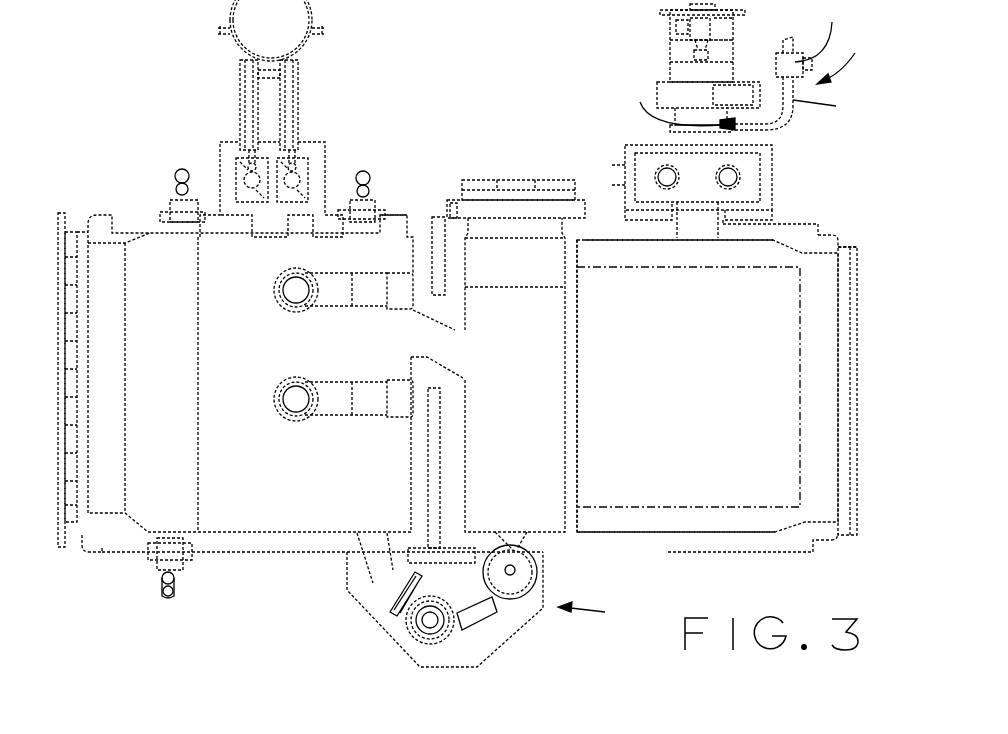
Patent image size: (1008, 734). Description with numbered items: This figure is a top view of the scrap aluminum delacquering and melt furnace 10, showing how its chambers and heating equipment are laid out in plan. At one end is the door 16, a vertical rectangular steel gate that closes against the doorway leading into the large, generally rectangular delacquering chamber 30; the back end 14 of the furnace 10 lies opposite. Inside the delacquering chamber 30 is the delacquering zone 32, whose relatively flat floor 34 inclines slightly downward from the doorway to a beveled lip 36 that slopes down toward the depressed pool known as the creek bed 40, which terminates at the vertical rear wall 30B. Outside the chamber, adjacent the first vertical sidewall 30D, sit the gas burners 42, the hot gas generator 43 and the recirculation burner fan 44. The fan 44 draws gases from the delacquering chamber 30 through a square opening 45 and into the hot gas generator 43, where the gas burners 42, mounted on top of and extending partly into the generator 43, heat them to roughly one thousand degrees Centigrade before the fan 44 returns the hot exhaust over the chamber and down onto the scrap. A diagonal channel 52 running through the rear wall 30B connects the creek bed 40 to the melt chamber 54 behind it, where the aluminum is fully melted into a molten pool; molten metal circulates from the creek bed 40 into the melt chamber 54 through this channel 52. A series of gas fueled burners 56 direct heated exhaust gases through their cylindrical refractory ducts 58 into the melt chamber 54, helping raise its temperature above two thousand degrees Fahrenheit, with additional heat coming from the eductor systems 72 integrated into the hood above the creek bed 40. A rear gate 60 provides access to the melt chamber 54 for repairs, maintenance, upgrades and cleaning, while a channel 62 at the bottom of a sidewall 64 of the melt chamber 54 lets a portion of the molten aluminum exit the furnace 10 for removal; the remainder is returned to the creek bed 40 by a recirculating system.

The scrap aluminum delacquering and melt furnace 10 is at (518, 88).
The back end 14 is at (167, 83).
The door 16 is at (842, 358).
The delacquering chamber 30 is at (856, 242).
The rear wall 30B is at (465, 403).
The first vertical sidewall 30D is at (763, 240).
The delacquering zone 32 is at (755, 320).
The floor 34 is at (763, 443).
The beveled lip 36 is at (572, 467).
The creek bed 40 is at (525, 492).
The gas burners 42 is at (665, 170).
The hot gas generator 43 is at (775, 165).
The recirculation burner fan 44 is at (745, 32).
The square opening 45 is at (645, 252).
The diagonal channel 52 is at (365, 256).
The melt chamber 54 is at (427, 343).
The gas fueled burners 56 is at (178, 190).
The cylindrical refractory ducts 58 is at (180, 228).
The rear gate 60 is at (64, 375).
The channel 62 is at (270, 217).
The sidewall 64 is at (443, 200).
The eductor system 72 is at (362, 305).